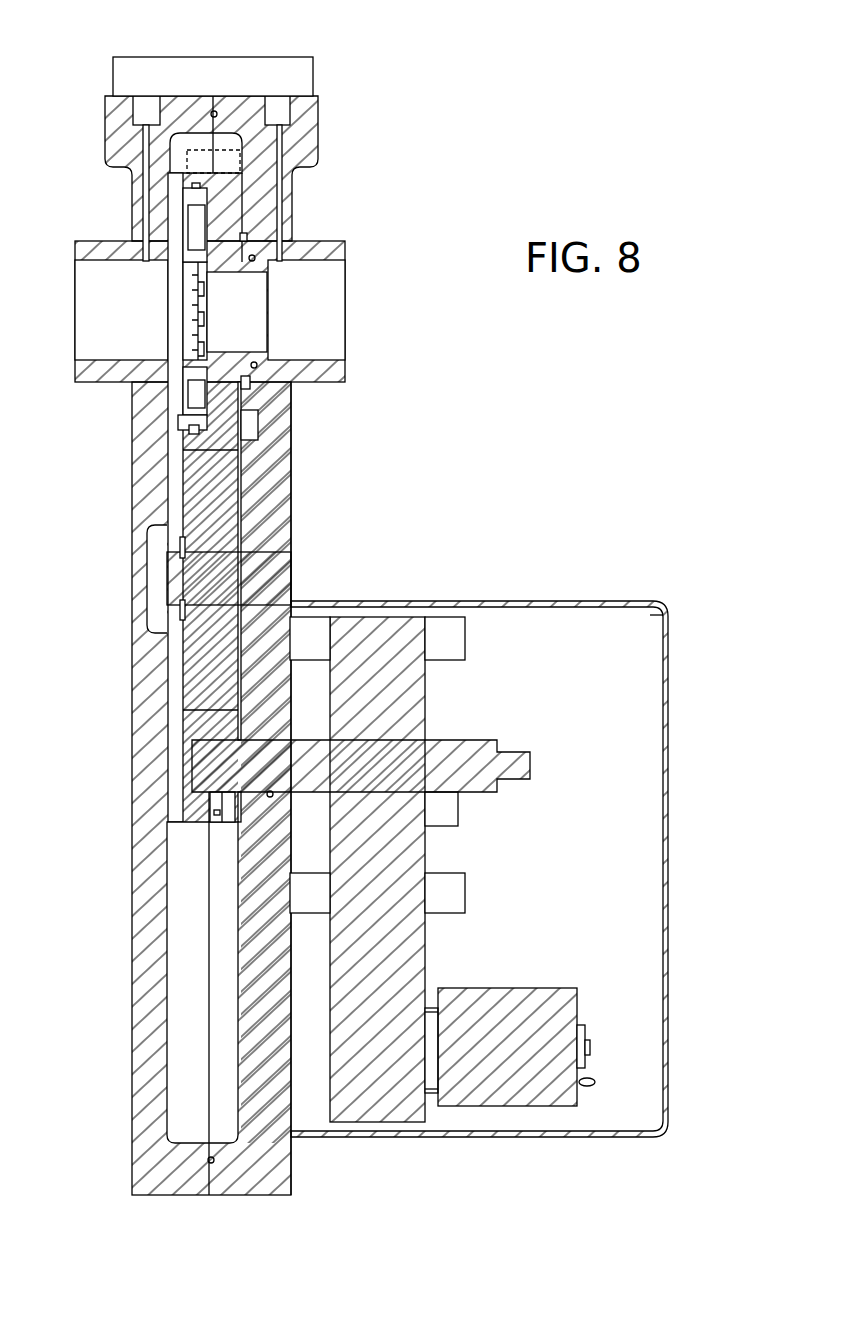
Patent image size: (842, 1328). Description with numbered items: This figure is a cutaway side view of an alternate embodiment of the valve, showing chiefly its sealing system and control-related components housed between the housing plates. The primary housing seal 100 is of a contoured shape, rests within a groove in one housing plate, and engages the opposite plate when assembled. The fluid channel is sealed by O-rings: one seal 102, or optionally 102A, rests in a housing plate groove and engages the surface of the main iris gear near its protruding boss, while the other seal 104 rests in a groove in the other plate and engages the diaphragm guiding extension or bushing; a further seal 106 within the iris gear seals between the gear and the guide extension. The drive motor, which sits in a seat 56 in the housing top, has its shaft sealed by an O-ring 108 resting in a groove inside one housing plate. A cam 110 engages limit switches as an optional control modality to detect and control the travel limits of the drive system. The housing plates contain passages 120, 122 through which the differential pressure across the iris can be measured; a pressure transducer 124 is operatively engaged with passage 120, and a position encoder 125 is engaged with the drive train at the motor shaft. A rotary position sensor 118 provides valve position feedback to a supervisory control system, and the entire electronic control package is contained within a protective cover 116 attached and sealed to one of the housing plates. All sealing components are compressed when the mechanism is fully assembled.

The seat 56 is at (540, 1053).
The primary housing seal 100 is at (218, 110).
The fluid channel seal 102 is at (247, 237).
The fluid channel seal 102A is at (256, 368).
The seal 104 is at (185, 395).
The seal 106 is at (194, 435).
The O-ring 108 is at (272, 737).
The cam 110 is at (460, 812).
The protective cover 116 is at (668, 916).
The rotary position sensor 118 is at (260, 425).
The passage 120 is at (138, 118).
The passage 122 is at (287, 117).
The pressure transducer 124 is at (193, 72).
The position encoder 125 is at (462, 760).